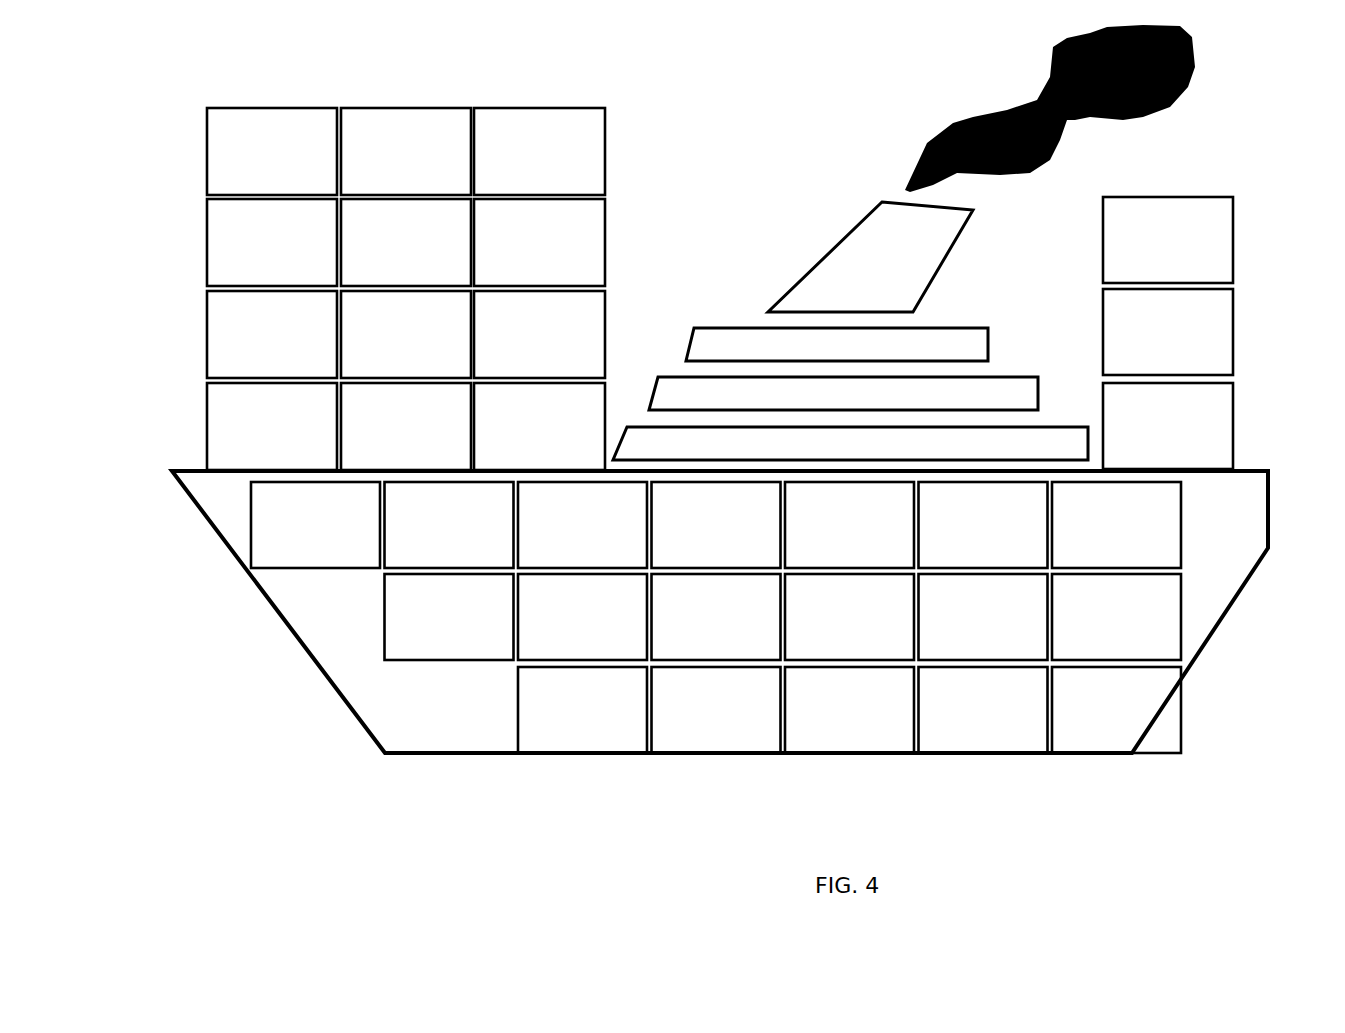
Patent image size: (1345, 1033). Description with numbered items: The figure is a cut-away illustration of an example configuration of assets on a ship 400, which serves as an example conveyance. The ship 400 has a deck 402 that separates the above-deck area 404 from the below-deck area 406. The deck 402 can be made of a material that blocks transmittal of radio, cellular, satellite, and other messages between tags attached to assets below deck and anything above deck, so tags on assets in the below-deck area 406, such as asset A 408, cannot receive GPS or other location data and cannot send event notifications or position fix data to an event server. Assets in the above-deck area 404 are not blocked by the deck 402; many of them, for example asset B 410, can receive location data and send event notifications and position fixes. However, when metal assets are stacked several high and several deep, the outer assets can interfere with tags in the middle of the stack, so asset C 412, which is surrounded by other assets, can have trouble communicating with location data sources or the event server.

The ship 400 is at (99, 364).
The deck 402 is at (1268, 470).
The above-deck area 404 is at (756, 247).
The below-deck area 406 is at (798, 614).
The asset A 408 is at (716, 617).
The asset B 410 is at (406, 151).
The asset C 412 is at (406, 426).